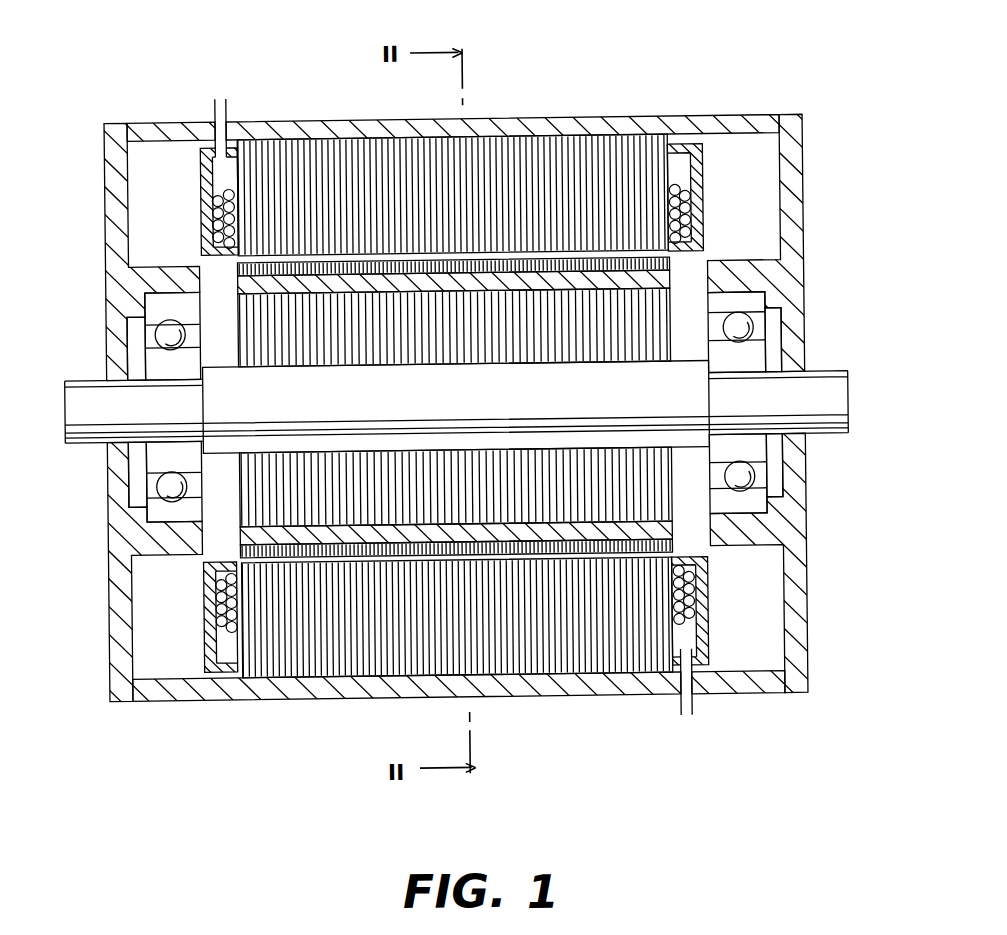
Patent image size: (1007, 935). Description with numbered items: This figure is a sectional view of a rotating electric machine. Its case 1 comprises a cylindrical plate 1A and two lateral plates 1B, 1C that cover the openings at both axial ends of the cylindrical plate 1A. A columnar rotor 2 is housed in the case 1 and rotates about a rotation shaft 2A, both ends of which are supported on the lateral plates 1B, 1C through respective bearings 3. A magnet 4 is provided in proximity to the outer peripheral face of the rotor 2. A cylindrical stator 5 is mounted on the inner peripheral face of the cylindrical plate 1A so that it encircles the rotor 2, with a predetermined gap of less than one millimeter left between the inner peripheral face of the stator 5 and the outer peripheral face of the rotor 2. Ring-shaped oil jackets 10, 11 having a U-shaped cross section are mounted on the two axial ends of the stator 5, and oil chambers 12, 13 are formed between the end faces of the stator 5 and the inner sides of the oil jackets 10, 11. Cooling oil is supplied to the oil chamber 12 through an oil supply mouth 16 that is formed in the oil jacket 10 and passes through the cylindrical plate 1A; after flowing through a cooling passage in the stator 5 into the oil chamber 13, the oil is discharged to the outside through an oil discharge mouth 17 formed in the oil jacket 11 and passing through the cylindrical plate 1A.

The case 1 is at (503, 467).
The cylindrical plate 1A is at (618, 120).
The lateral plate 1B is at (112, 239).
The lateral plate 1C is at (794, 188).
The rotor 2 is at (503, 467).
The rotation shaft 2A is at (828, 374).
The bearing 3 is at (160, 454).
The magnet 4 is at (248, 282).
The stator 5 is at (361, 157).
The oil jacket 10 is at (220, 167).
The oil jacket 11 is at (705, 176).
The oil chamber 12 is at (217, 165).
The oil chamber 13 is at (681, 165).
The oil supply mouth 16 is at (230, 113).
The oil discharge mouth 17 is at (677, 711).